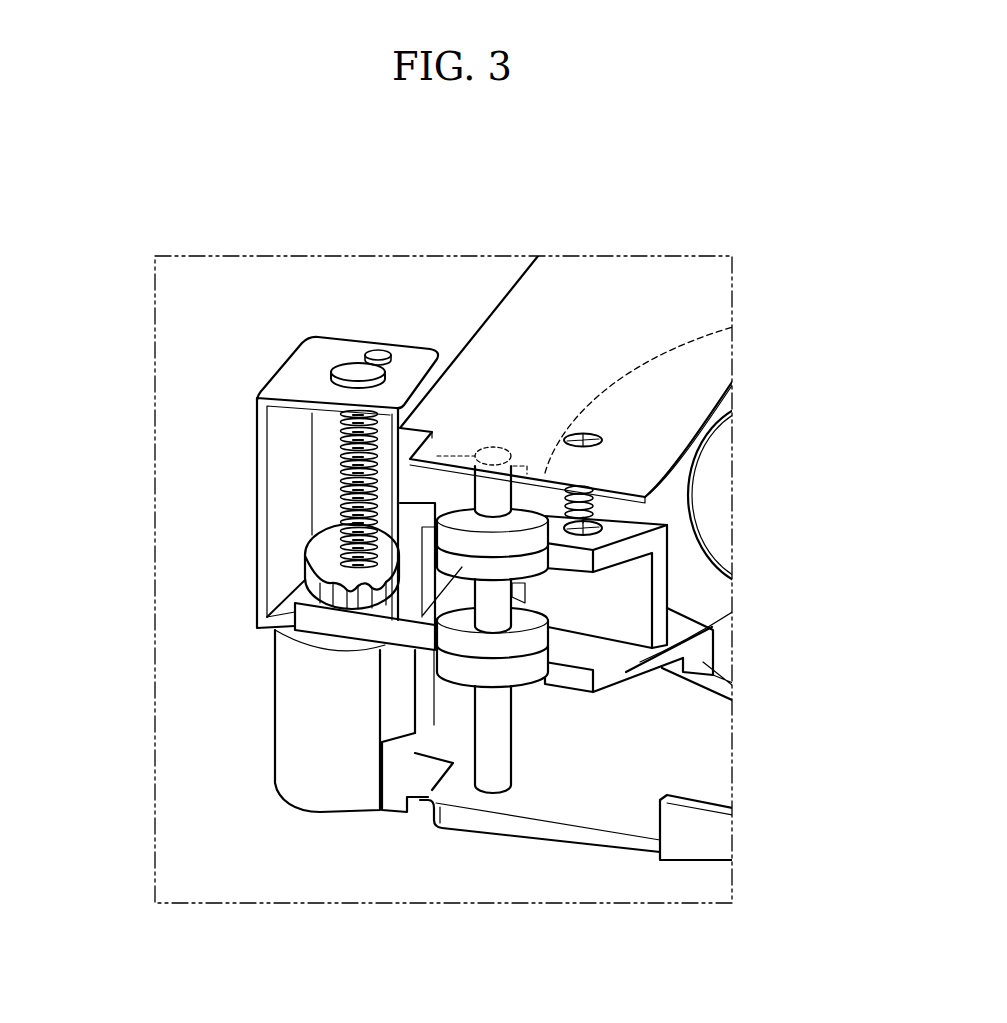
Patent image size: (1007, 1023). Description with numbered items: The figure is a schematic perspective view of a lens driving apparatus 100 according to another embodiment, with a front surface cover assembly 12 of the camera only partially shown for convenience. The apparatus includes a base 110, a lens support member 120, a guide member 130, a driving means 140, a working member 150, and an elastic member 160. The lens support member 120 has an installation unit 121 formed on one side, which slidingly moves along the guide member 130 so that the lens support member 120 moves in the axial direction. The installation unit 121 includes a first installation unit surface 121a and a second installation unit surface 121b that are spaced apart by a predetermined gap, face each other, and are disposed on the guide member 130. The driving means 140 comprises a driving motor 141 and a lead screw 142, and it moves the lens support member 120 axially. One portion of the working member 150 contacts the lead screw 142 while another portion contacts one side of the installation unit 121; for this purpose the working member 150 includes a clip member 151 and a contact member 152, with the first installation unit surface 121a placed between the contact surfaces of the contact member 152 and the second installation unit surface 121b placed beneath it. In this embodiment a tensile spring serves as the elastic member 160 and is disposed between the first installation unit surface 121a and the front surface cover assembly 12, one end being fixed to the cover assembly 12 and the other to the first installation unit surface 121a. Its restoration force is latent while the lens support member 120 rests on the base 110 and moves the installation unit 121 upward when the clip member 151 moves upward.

The front surface cover assembly 12 is at (557, 298).
The lens driving apparatus 100 is at (215, 299).
The base 110 is at (610, 840).
The lens support member 120 is at (689, 608).
The installation unit 121 is at (689, 604).
The first installation unit surface 121a is at (618, 557).
The second installation unit surface 121b is at (668, 643).
The guide member 130 is at (490, 765).
The driving means 140 is at (235, 574).
The driving motor 141 is at (293, 698).
The lead screw 142 is at (352, 452).
The working member 150 is at (365, 758).
The clip member 151 is at (342, 578).
The contact member 152 is at (410, 623).
The elastic member 160 is at (596, 508).